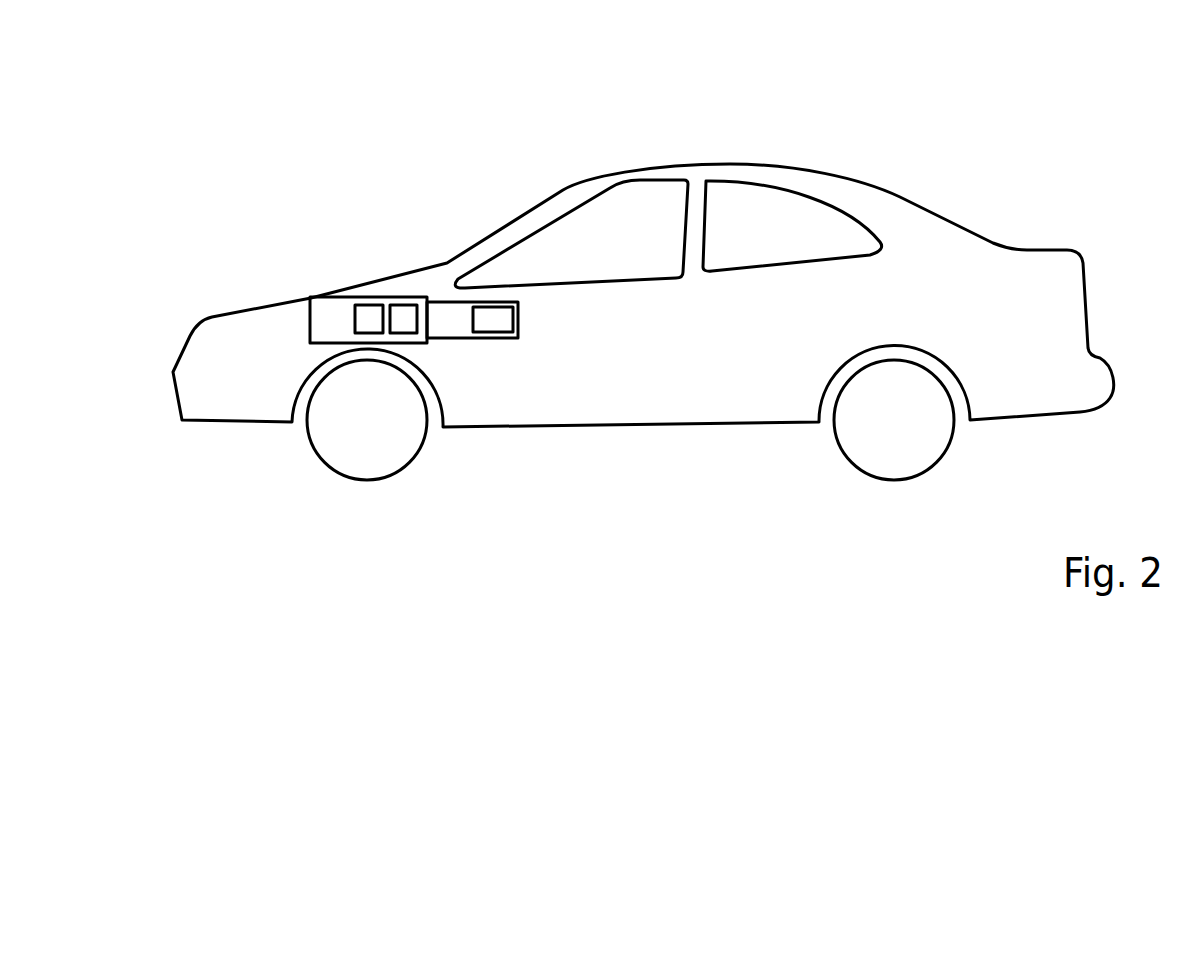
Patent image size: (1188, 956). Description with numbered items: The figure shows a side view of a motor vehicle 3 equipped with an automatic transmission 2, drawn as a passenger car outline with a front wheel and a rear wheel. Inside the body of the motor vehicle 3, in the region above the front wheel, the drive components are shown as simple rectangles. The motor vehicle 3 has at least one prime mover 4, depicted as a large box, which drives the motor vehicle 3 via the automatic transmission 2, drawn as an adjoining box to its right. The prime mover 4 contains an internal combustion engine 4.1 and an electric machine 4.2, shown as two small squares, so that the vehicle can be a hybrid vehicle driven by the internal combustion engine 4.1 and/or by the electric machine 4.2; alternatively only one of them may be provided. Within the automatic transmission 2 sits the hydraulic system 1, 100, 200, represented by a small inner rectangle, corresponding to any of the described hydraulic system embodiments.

The hydraulic system 1 is at (556, 185).
The hydraulic system 100 is at (556, 185).
The hydraulic system 200 is at (500, 318).
The automatic transmission 2 is at (442, 315).
The motor vehicle 3 is at (980, 170).
The prime mover 4 is at (328, 307).
The internal combustion engine 4.1 is at (365, 310).
The electric machine 4.2 is at (403, 310).